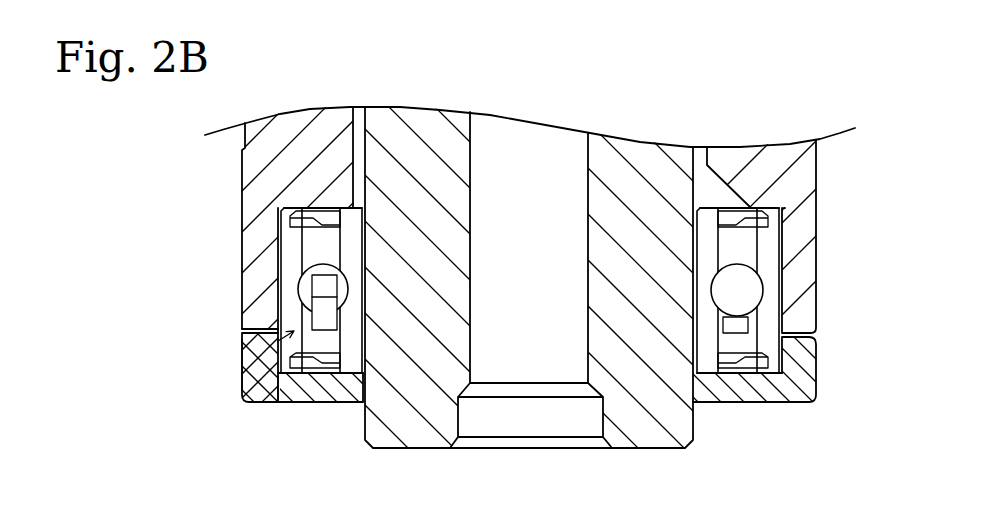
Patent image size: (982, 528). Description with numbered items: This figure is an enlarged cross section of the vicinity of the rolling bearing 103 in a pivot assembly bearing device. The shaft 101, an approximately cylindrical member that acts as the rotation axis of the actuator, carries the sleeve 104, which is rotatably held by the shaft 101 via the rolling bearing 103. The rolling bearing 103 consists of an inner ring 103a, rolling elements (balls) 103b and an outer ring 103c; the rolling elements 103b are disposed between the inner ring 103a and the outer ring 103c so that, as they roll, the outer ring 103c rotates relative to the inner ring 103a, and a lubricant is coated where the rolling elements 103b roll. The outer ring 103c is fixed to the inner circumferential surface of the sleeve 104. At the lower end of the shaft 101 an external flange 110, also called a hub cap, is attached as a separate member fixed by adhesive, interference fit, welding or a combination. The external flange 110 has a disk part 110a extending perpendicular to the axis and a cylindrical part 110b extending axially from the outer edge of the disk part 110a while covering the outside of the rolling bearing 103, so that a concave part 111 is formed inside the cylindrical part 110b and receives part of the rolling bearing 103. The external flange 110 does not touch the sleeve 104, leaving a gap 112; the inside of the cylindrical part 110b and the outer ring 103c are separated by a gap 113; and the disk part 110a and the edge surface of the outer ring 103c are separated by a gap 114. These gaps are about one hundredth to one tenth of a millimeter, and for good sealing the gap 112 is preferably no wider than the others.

The shaft 101 is at (418, 430).
The rolling bearing 103 is at (260, 275).
The inner ring 103a is at (353, 217).
The rolling elements (balls) 103b is at (305, 276).
The outer ring 103c is at (292, 242).
The sleeve 104 is at (256, 306).
The external flange 110 is at (266, 393).
The disk part 110a is at (316, 397).
The cylindrical part 110b is at (250, 354).
The concave part 111 is at (337, 388).
The gap 112 is at (243, 335).
The gap 113 is at (246, 387).
The gap 114 is at (283, 389).